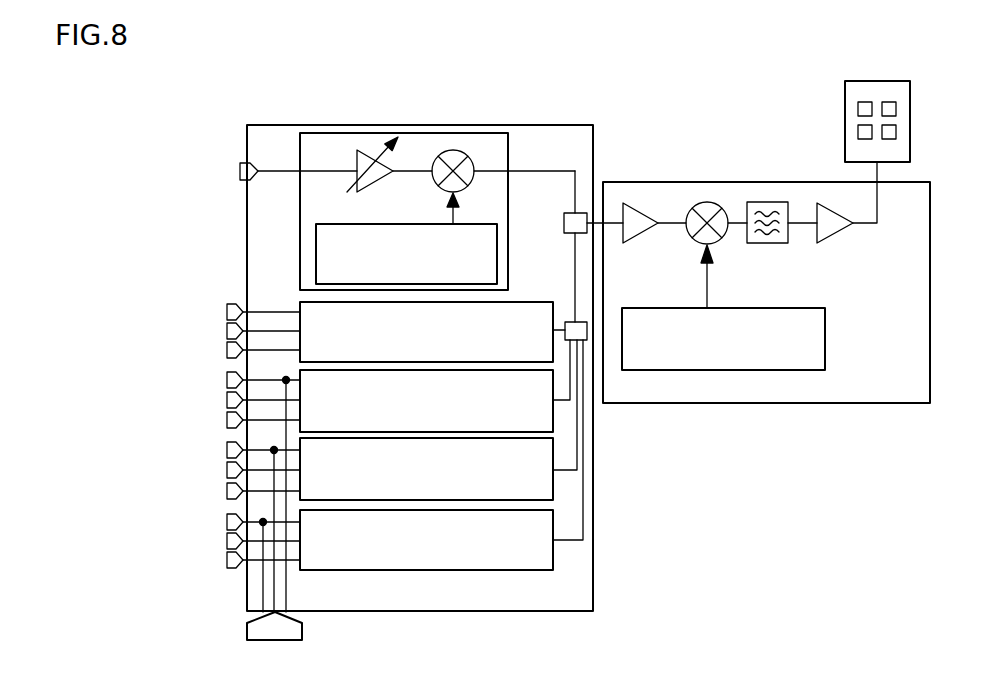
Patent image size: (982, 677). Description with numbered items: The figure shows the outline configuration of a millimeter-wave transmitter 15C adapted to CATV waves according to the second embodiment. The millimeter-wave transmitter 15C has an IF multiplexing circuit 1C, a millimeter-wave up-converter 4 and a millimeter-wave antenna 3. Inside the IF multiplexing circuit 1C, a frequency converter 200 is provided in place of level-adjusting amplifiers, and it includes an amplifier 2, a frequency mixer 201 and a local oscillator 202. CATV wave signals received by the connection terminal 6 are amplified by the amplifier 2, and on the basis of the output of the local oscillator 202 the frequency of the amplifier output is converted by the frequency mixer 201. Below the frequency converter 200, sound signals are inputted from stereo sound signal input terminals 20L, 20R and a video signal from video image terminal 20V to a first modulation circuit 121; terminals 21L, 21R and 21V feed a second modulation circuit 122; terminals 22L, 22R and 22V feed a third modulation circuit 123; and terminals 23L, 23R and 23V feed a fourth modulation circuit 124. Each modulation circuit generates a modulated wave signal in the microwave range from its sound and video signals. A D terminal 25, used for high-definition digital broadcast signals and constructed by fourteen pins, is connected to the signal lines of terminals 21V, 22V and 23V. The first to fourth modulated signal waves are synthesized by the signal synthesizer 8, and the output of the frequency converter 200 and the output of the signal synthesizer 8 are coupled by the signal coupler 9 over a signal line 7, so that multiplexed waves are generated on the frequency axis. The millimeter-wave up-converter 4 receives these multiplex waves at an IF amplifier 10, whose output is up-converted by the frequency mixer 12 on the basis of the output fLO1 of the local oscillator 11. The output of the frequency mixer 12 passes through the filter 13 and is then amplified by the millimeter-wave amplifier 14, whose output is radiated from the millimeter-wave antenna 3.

The millimeter-wave transmitter 15C is at (938, 45).
The IF multiplexing circuit 1C is at (268, 125).
The frequency converter 200 is at (300, 210).
The amplifier 2 is at (356, 162).
The frequency mixer 201 is at (450, 151).
The local oscillator 202 is at (316, 256).
The connection terminal 6 is at (240, 172).
The signal line 7 is at (573, 255).
The signal coupler 9 is at (566, 213).
The signal synthesizer 8 is at (587, 333).
The millimeter-wave up-converter 4 is at (890, 403).
The IF amplifier 10 is at (637, 208).
The frequency mixer 12 is at (705, 200).
The filter 13 is at (767, 202).
The millimeter-wave amplifier 14 is at (830, 210).
The millimeter-wave antenna 3 is at (912, 120).
The local oscillator 11 is at (772, 370).
The first modulation circuit 121 is at (553, 347).
The second modulation circuit 122 is at (553, 415).
The third modulation circuit 123 is at (553, 483).
The fourth modulation circuit 124 is at (553, 553).
The video image terminal 20V is at (227, 312).
The stereo sound signal input terminal 20L is at (227, 331).
The stereo sound signal input terminal 20R is at (227, 350).
The video input terminal 21V is at (227, 380).
The stereo sound signal input terminal 21L is at (227, 400).
The stereo sound signal input terminal 21R is at (227, 420).
The video input terminal 22V is at (227, 450).
The stereo sound signal input terminal 22L is at (227, 470).
The stereo sound signal input terminal 22R is at (227, 491).
The video input terminal 23V is at (227, 522).
The stereo sound signal input terminal 23L is at (227, 541).
The stereo sound signal input terminal 23R is at (227, 560).
The D terminal 25 is at (247, 627).